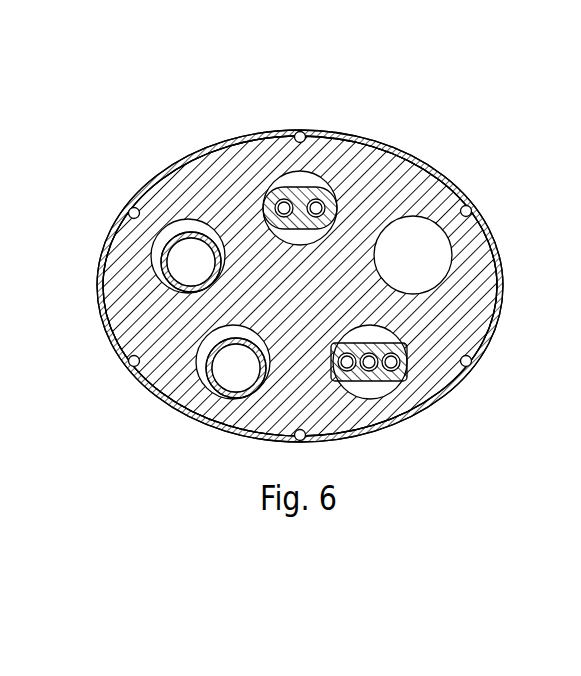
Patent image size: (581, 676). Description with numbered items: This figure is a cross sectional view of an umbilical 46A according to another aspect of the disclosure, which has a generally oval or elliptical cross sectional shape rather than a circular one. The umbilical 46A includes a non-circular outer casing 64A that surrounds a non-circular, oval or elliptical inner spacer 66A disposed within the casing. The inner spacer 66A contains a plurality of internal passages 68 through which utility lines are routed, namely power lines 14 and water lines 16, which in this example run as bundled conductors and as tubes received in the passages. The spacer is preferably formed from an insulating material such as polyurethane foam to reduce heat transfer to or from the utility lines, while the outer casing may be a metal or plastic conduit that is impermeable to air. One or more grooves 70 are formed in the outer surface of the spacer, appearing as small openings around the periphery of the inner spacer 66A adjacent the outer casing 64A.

The power lines 14 is at (302, 228).
The water lines 16 is at (178, 265).
The umbilical 46A is at (331, 259).
The non-circular outer casing 64A is at (498, 322).
The inner spacer 66A is at (463, 193).
The internal passages 68 is at (190, 228).
The grooves 70 is at (128, 210).